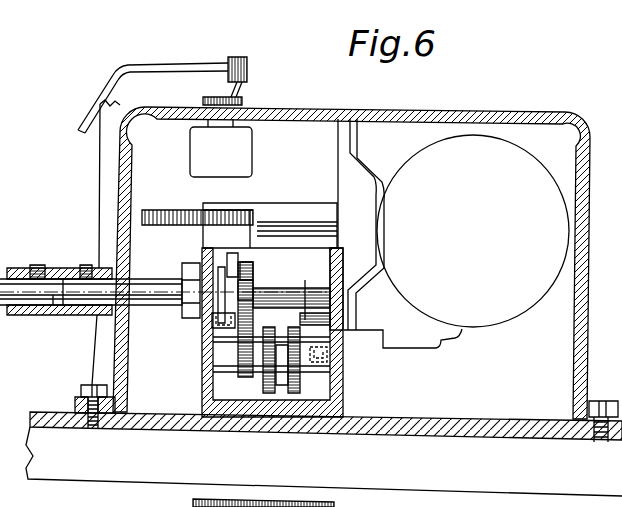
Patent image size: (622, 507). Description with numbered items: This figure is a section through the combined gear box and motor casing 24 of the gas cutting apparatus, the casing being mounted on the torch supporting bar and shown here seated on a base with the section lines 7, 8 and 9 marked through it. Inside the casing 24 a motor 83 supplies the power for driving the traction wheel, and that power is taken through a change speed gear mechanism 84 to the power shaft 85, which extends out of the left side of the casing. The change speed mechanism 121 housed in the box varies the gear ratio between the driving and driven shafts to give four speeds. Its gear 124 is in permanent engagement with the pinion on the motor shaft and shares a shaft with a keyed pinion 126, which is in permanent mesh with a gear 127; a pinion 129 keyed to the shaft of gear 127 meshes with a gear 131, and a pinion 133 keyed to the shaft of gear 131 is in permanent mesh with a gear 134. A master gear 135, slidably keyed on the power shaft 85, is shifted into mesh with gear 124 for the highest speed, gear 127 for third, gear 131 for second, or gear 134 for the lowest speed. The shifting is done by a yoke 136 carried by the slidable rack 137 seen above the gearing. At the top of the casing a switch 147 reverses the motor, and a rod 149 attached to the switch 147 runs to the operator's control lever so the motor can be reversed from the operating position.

The section line 7- 7 is at (197, 78).
The section line 8- 8 is at (135, 213).
The section line 9- 9 is at (167, 256).
The combined gear box and motor casing 24 is at (574, 117).
The motor 83 is at (478, 157).
The change speed gear mechanism 84 is at (213, 380).
The power shaft 85 is at (53, 306).
The change speed mechanism 121 is at (318, 392).
The gear 124 is at (343, 343).
The pinion 126 is at (306, 303).
The gear 127 is at (295, 393).
The pinion 129 is at (278, 395).
The gear 131 is at (267, 393).
The pinion 133 is at (252, 380).
The gear 134 is at (252, 282).
The master gear 135 is at (253, 266).
The yoke 136 is at (223, 250).
The slidable rack 137 is at (177, 212).
The switch 147 is at (240, 93).
The rod 149 is at (111, 80).